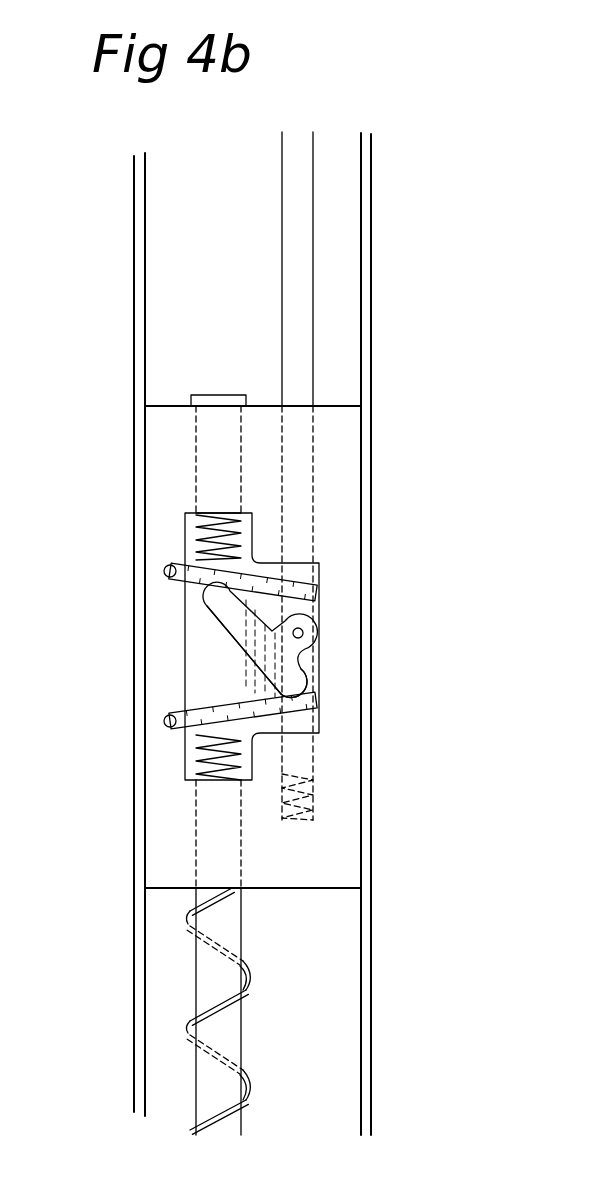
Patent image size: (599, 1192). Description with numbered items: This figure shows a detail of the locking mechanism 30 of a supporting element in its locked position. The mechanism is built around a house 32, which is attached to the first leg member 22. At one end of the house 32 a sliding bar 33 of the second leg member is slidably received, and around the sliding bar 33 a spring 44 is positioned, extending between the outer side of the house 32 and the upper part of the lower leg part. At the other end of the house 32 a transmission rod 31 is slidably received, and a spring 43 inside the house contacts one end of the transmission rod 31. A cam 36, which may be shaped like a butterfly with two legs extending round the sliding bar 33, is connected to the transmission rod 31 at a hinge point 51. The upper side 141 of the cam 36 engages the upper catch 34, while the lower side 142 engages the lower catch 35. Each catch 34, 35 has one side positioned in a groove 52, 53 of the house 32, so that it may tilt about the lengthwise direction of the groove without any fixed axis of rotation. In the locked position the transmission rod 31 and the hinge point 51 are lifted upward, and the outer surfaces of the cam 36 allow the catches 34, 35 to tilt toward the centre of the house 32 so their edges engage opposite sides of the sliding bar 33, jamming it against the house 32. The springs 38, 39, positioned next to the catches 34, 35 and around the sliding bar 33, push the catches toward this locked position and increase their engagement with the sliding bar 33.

The first leg member 22 is at (140, 217).
The locking mechanism 30 is at (383, 847).
The transmission rod 31 is at (297, 237).
The house 32 is at (332, 475).
The sliding bar 33 is at (154, 770).
The catch 34 is at (160, 561).
The catch 35 is at (162, 697).
The cam 36 is at (264, 638).
The spring 38 is at (195, 525).
The spring 39 is at (212, 772).
The spring 43 is at (300, 792).
The spring 44 is at (192, 918).
The hinge point 51 is at (300, 631).
The groove 52 is at (168, 571).
The groove 53 is at (168, 721).
The upper side of the cam 141 is at (291, 680).
The lower side of the cam 142 is at (218, 611).